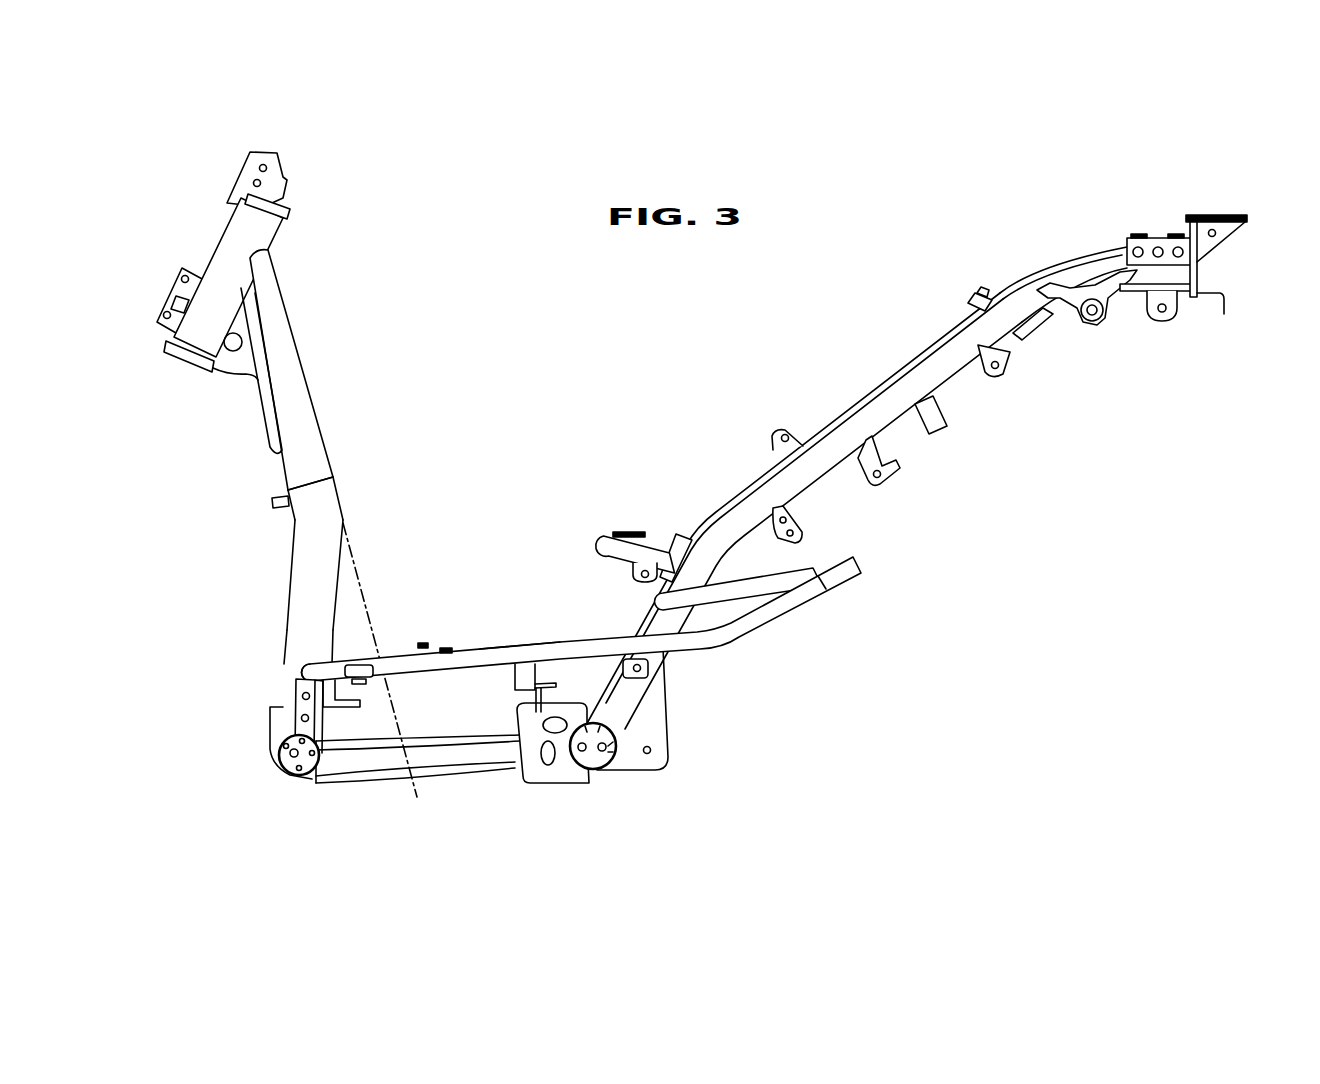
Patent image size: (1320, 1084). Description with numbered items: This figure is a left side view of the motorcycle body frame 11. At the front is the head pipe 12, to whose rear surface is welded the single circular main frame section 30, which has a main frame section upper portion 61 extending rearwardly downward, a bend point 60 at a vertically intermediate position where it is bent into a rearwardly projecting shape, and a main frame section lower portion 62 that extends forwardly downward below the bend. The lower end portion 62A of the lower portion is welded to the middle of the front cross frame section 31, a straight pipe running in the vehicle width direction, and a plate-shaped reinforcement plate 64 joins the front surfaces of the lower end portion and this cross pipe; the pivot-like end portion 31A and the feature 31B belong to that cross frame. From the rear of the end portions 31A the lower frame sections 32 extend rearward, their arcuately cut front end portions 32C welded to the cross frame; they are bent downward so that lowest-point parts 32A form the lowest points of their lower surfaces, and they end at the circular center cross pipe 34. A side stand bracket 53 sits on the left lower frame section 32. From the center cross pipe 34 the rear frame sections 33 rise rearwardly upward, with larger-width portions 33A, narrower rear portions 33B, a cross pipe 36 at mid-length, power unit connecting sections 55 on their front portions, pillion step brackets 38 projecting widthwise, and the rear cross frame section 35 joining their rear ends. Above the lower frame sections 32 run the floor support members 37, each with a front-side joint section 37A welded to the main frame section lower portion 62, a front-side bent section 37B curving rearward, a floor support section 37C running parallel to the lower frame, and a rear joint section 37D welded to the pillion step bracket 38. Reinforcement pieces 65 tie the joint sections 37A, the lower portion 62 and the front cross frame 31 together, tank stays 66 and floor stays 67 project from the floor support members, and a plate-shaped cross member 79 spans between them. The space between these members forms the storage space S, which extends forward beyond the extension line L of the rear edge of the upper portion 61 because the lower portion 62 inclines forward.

The body frame 11 is at (856, 409).
The head pipe 12 is at (223, 242).
The main frame section 30 is at (298, 488).
The front cross frame section 31 is at (248, 793).
The end portions of front cross frame section 31A is at (297, 775).
The pivot boss 31B is at (276, 764).
The lower frame section 32 is at (418, 804).
The lowest-point part 32A is at (405, 785).
The front end portion of lower frame section 32C is at (340, 772).
The rear frame section 33 is at (856, 470).
The larger-width portion 33A is at (735, 496).
The rear portion of rear frame section 33B is at (1020, 277).
The center cross pipe 34 is at (598, 769).
The rear cross frame section 35 is at (1163, 237).
The cross pipe 36 is at (612, 534).
The floor support member 37 is at (537, 624).
The front-side joint section 37A is at (299, 666).
The front-side bent section 37B is at (348, 663).
The floor support section 37C is at (514, 648).
The rear joint section 37D is at (780, 612).
The pillion step bracket 38 is at (752, 588).
The side stand bracket 53 is at (548, 767).
The power unit connecting section 55 is at (650, 735).
The bend point 60 is at (334, 496).
The main frame section upper portion 61 is at (316, 421).
The main frame section lower portion 62 is at (288, 623).
The lower end portion 62A is at (290, 726).
The reinforcement plate 64 is at (268, 733).
The reinforcement piece 65 is at (297, 699).
The tank stay 66 is at (340, 706).
The floor stay 67 is at (363, 678).
The cross member 79 is at (446, 648).
The extension line L is at (358, 567).
The storage space S is at (420, 695).